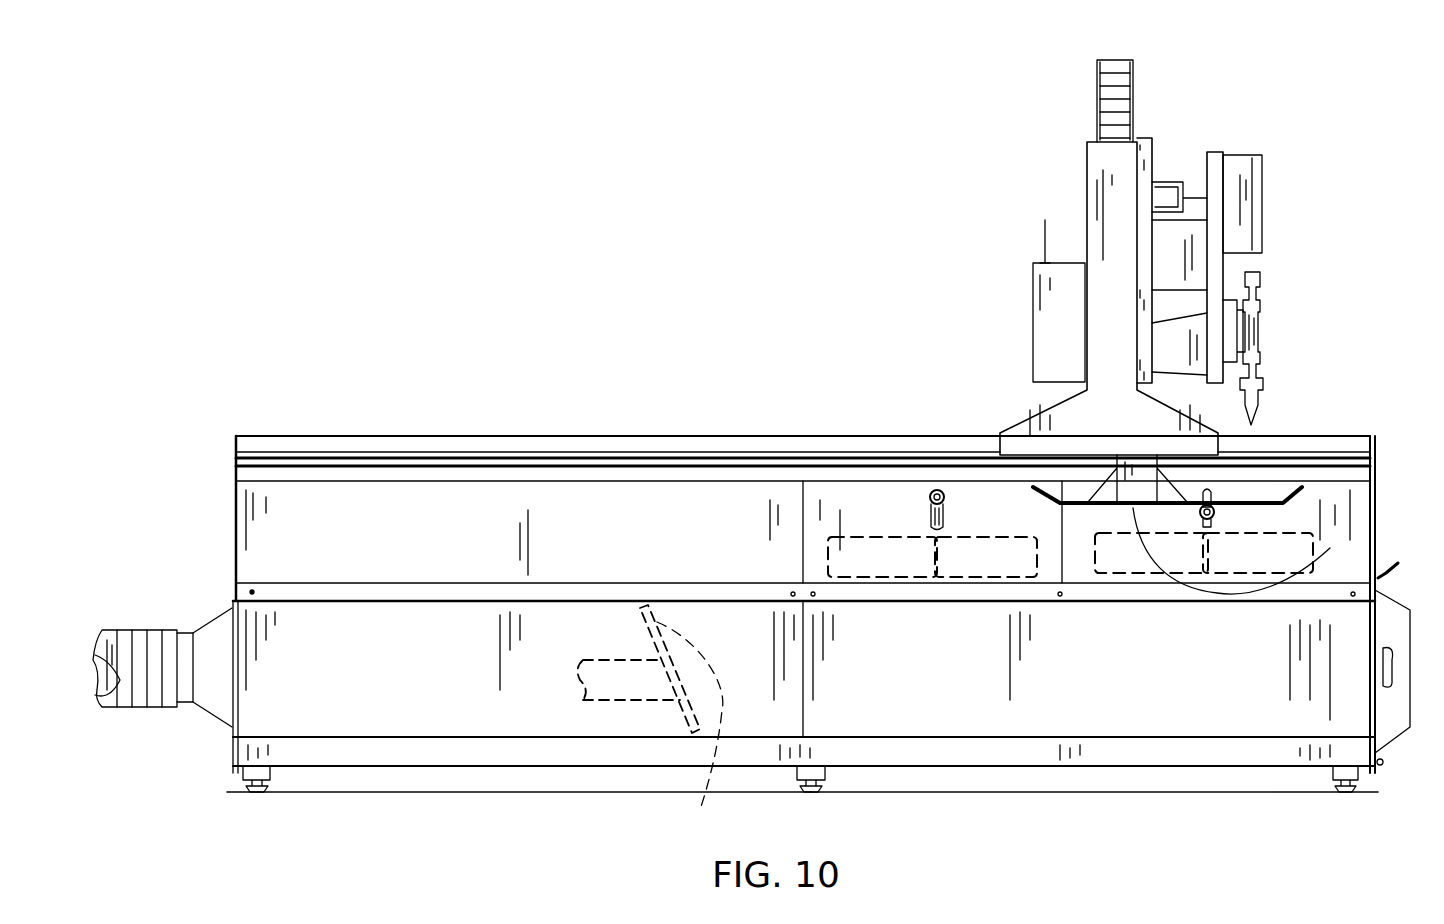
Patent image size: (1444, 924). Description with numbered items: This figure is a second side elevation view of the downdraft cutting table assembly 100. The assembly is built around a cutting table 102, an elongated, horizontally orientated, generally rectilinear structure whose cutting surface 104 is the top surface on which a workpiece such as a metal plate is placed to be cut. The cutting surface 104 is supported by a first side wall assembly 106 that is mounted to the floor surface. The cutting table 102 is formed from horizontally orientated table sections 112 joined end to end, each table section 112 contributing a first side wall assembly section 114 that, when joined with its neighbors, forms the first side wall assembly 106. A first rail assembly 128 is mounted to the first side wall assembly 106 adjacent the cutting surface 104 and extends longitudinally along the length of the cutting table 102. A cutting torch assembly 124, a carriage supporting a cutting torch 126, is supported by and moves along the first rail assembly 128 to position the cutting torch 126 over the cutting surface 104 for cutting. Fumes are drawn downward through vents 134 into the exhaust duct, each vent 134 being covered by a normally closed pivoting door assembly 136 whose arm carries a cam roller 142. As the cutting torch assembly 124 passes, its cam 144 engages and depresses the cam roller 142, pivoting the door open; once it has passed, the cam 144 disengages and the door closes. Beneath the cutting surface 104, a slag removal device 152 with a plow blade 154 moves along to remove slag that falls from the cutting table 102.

The downdraft cutting table assembly 100 is at (503, 283).
The cutting table 102 is at (1067, 765).
The cutting surface (top surface) 104 is at (462, 435).
The first side wall assembly 106 is at (397, 690).
The table section 112 is at (518, 712).
The first side wall assembly section 114 is at (357, 708).
The cutting torch assembly 124 is at (1157, 150).
The cutting torch 126 is at (1258, 330).
The first rail assembly 128 is at (690, 450).
The vent 134 is at (855, 538).
The pivoting door assembly (vent door or damper) 136 is at (903, 547).
The cam roller 142 is at (937, 489).
The cam 144 is at (1330, 548).
The slag removal device 152 is at (630, 672).
The plow blade 154 is at (703, 803).